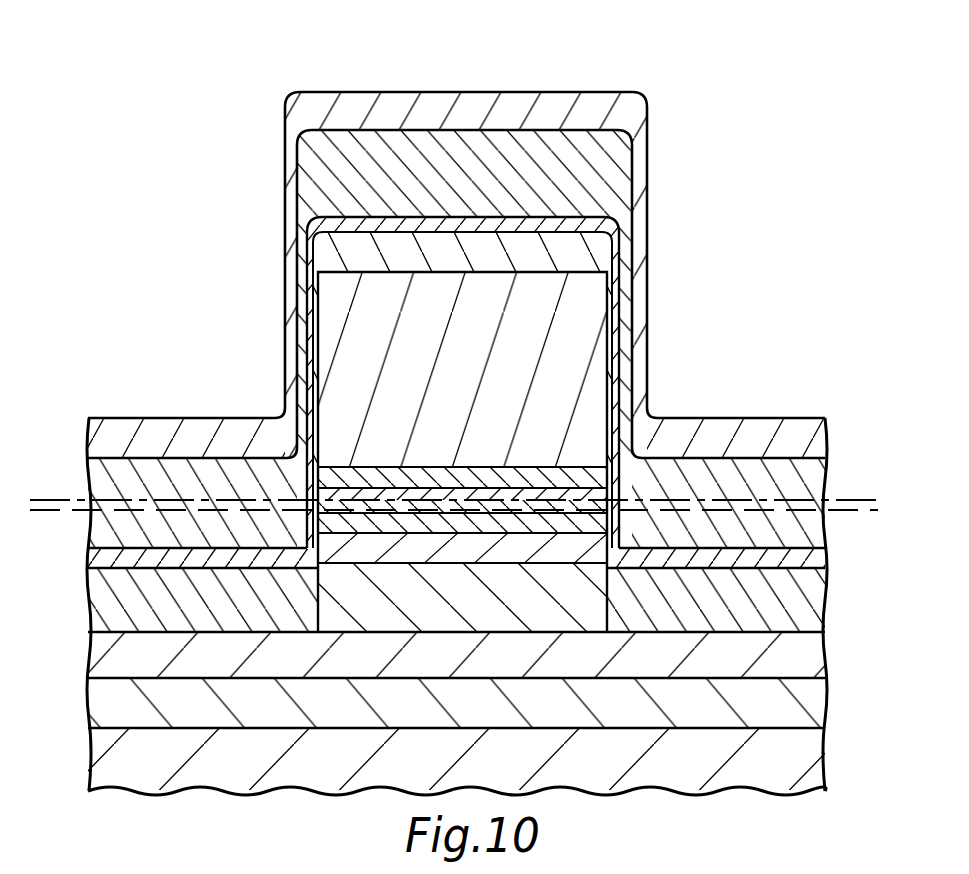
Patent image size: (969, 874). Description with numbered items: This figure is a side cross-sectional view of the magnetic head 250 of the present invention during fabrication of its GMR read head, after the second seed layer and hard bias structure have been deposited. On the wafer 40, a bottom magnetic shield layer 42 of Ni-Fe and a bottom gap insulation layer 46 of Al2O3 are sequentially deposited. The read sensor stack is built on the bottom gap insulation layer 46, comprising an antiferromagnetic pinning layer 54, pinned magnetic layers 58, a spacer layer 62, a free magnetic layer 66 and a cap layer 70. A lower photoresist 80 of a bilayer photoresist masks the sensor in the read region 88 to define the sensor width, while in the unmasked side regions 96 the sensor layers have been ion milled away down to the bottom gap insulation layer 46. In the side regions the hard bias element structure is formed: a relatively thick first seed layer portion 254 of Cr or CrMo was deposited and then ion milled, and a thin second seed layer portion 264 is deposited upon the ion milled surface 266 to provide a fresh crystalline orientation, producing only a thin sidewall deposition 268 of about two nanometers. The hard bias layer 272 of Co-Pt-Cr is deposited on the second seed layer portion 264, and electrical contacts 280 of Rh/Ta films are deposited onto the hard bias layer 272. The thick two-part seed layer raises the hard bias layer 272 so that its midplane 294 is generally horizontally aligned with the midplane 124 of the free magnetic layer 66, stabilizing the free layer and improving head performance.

The wafer 40 is at (615, 770).
The bottom magnetic shield layer 42 is at (557, 718).
The bottom gap insulation layer 46 is at (514, 673).
The antiferromagnetic pinning layer 54 is at (581, 606).
The pinned magnetic layers 58 is at (503, 550).
The spacer layer 62 is at (452, 525).
The free magnetic layer 66 is at (392, 503).
The cap layer 70 is at (432, 480).
The lower photoresist 80 is at (478, 352).
The read region 88 is at (473, 80).
The unmasked side regions 96 is at (181, 368).
The midplane of the free magnetic layer 124 is at (61, 500).
The magnetic head 250 is at (262, 267).
The first seed layer portion 254 is at (88, 602).
The second seed layer portion 264 is at (86, 563).
The ion milled surface 266 is at (247, 549).
The sidewall deposition 268 is at (310, 499).
The hard bias layer 272 is at (90, 472).
The electrical contacts 280 is at (198, 400).
The midplane of the hard bias layer 294 is at (62, 526).